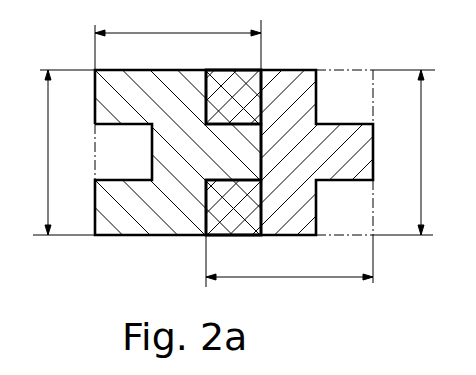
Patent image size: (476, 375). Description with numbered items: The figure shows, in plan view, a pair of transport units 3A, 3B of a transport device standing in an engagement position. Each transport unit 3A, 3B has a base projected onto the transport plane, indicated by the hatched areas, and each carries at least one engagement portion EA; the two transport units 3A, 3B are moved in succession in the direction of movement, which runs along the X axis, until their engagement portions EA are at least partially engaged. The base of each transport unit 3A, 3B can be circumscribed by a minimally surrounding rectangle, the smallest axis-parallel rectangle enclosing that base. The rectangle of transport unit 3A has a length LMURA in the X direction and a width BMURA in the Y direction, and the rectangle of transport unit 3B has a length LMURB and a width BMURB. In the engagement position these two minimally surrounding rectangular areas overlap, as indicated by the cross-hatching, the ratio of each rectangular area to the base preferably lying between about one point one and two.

The transport unit 3A is at (180, 170).
The transport unit 3B is at (313, 155).
The engagement portion EA is at (242, 155).
The length of the minimally surrounding rectangle of transport unit 3A LMURA is at (178, 38).
The width of the minimally surrounding rectangle of transport unit 3A BMURA is at (56, 152).
The length of the minimally surrounding rectangle of transport unit 3B LMURB is at (289, 261).
The width of the minimally surrounding rectangle of transport unit 3B BMURB is at (404, 152).